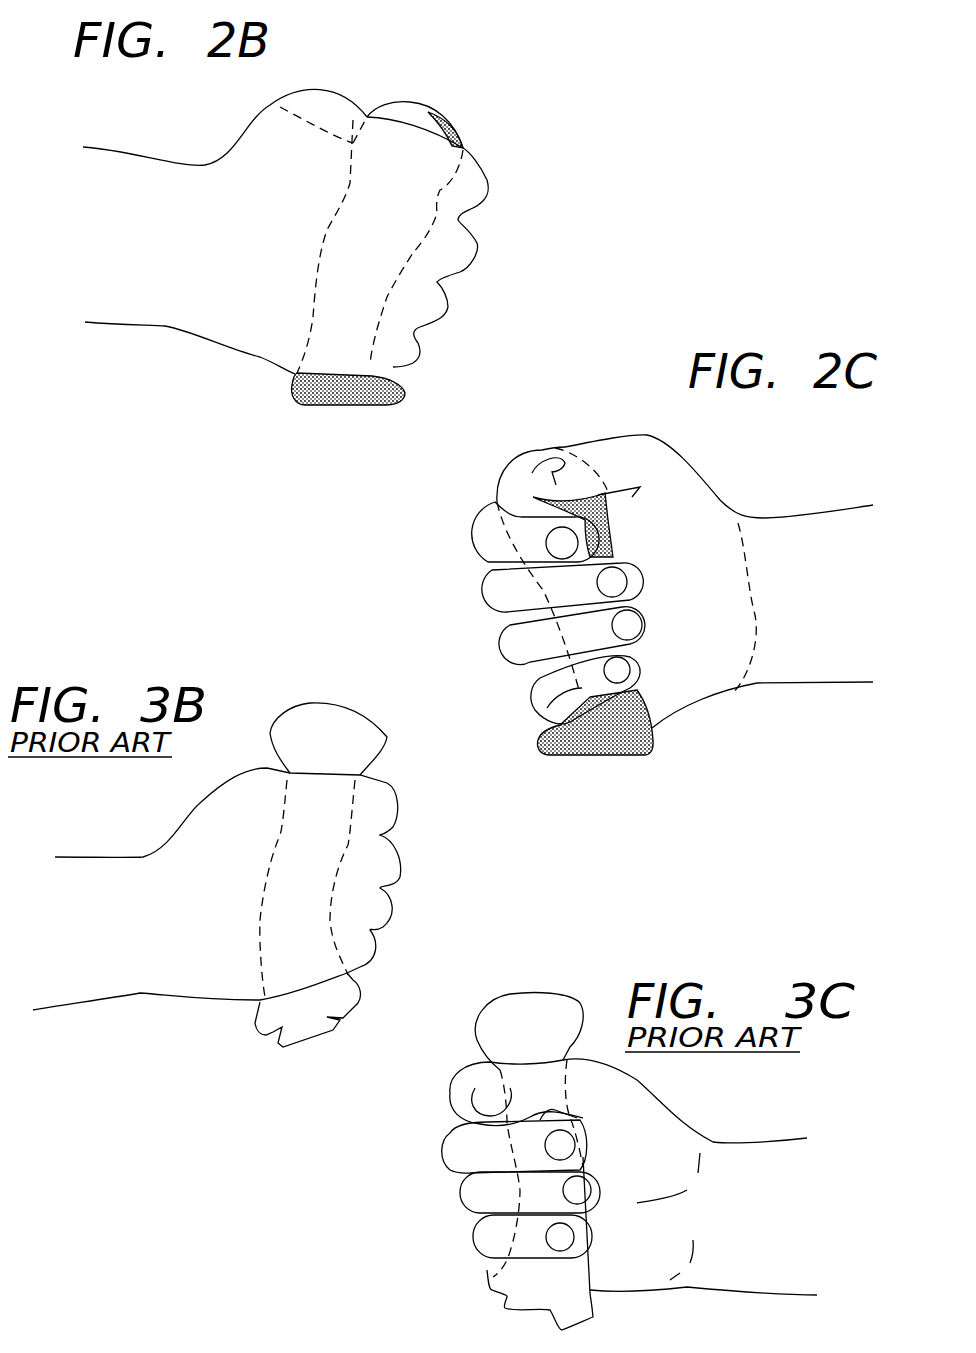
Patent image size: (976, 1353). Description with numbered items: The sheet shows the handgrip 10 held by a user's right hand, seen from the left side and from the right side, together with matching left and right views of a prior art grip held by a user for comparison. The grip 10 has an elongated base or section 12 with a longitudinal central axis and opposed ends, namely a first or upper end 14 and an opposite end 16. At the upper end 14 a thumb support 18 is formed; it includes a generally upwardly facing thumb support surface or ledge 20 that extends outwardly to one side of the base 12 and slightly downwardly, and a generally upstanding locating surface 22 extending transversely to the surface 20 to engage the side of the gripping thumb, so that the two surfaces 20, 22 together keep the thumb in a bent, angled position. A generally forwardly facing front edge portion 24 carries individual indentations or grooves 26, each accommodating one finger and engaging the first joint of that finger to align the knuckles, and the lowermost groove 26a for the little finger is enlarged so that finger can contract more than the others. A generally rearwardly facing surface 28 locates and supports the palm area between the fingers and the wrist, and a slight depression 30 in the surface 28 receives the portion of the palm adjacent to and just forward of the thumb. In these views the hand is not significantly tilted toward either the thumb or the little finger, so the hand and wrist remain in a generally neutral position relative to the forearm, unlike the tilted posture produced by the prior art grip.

In FIG. 2B, the handgrip 10 is at (378, 59).
In FIG. 2C, the handgrip 10 is at (512, 792).
In FIG. 2B, the elongated base 12 is at (340, 178).
In FIG. 2C, the elongated base 12 is at (632, 534).
In FIG. 2B, the upper end 14 is at (440, 108).
In FIG. 2C, the upper end 14 is at (508, 467).
In FIG. 2B, the lower end 16 is at (362, 407).
In FIG. 2C, the lower end 16 is at (593, 755).
In FIG. 2B, the thumb support 18 is at (474, 138).
In FIG. 2C, the thumb support 18 is at (487, 482).
In FIG. 2C, the thumb support surface 20 is at (575, 498).
In FIG. 2C, the locating surface 22 is at (521, 458).
In FIG. 2B, the front edge portion 24 is at (408, 280).
In FIG. 2C, the front edge portion 24 is at (531, 622).
In FIG. 2B, the grooves 26 is at (443, 192).
In FIG. 2C, the grooves 26 is at (520, 548).
In FIG. 2B, the lowermost groove 26a is at (370, 363).
In FIG. 2C, the lowermost groove 26a is at (553, 700).
In FIG. 2B, the rearwardly facing surface 28 is at (335, 228).
In FIG. 2C, the rearwardly facing surface 28 is at (617, 557).
In FIG. 2B, the depression 30 is at (280, 107).
In FIG. 2C, the depression 30 is at (625, 532).